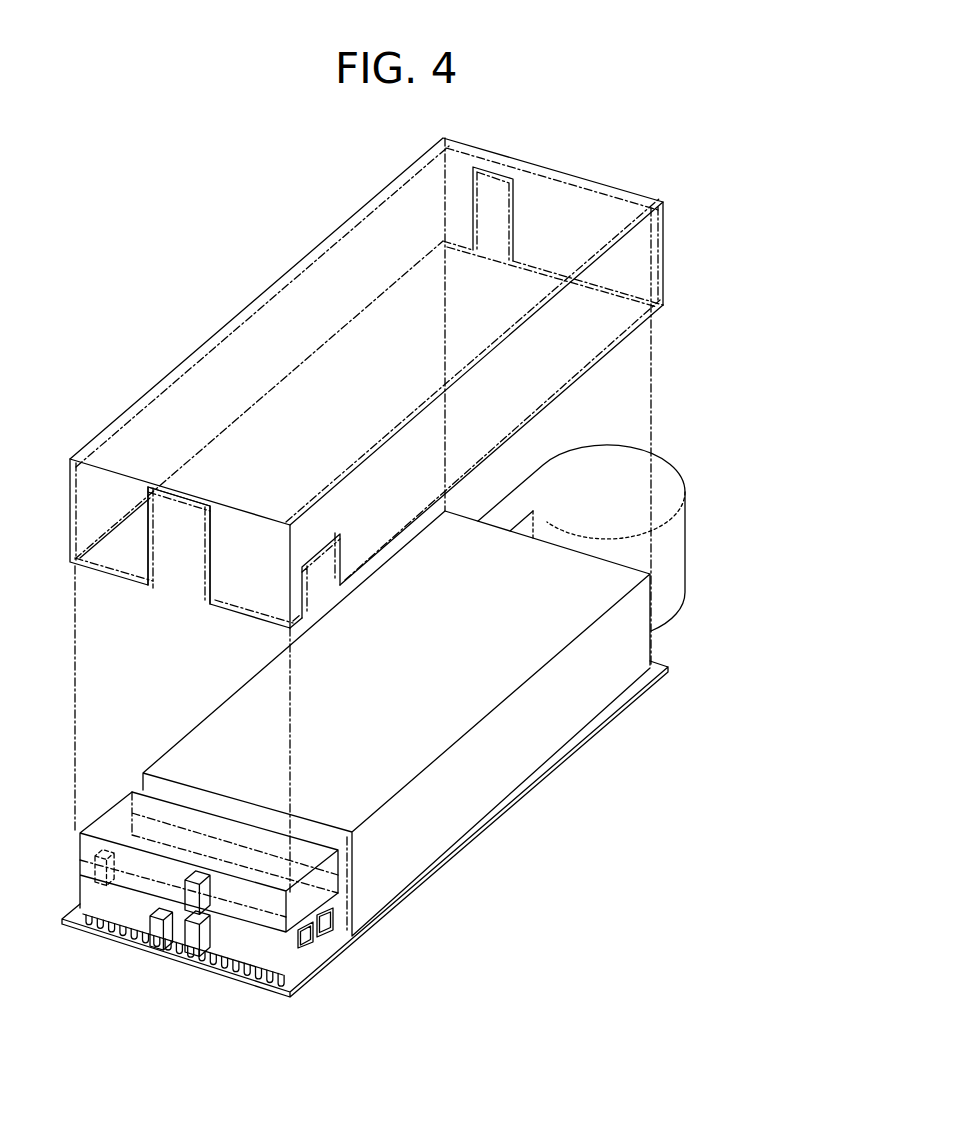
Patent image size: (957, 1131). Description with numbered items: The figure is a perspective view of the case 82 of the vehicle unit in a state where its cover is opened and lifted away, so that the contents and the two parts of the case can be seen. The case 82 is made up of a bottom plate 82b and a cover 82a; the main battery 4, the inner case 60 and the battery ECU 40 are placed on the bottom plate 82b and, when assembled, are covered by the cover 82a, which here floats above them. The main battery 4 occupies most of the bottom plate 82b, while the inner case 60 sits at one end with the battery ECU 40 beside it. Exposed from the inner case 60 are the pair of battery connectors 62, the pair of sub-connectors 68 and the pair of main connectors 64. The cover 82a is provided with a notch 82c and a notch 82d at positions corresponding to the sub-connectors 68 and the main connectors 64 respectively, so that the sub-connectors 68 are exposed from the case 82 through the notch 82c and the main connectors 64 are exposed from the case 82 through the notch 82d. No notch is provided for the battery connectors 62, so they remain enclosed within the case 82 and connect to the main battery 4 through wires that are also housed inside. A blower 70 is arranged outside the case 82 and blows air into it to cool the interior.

The main battery 4 is at (641, 642).
The battery electronic control unit 40 is at (80, 848).
The inner case 60 is at (122, 908).
The battery connectors 62 is at (103, 881).
The main connectors 64 is at (325, 920).
The sub-connectors 68 is at (195, 940).
The blower 70 is at (673, 562).
The case 82 is at (765, 269).
The cover 82a is at (663, 272).
The bottom plate 82b is at (637, 703).
The notch 82c is at (153, 528).
The notch 82d is at (306, 565).